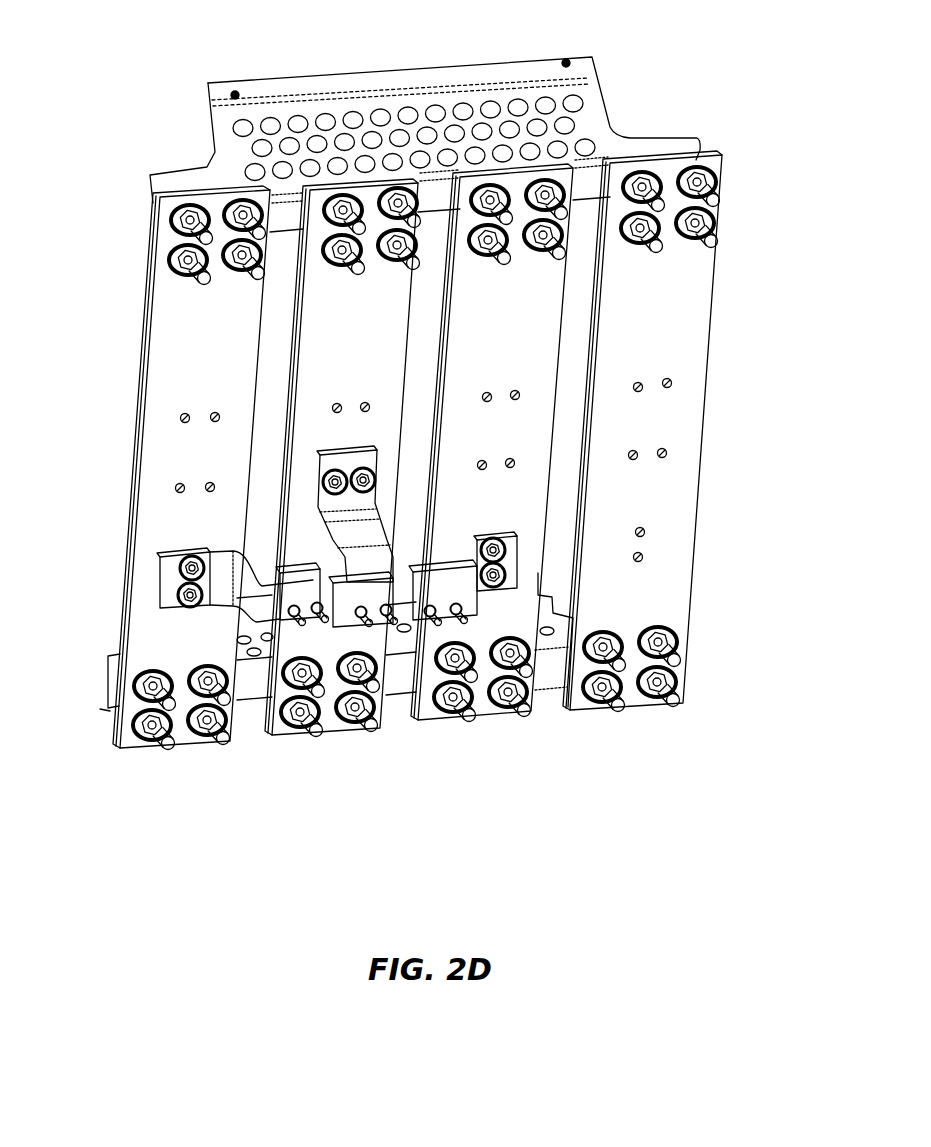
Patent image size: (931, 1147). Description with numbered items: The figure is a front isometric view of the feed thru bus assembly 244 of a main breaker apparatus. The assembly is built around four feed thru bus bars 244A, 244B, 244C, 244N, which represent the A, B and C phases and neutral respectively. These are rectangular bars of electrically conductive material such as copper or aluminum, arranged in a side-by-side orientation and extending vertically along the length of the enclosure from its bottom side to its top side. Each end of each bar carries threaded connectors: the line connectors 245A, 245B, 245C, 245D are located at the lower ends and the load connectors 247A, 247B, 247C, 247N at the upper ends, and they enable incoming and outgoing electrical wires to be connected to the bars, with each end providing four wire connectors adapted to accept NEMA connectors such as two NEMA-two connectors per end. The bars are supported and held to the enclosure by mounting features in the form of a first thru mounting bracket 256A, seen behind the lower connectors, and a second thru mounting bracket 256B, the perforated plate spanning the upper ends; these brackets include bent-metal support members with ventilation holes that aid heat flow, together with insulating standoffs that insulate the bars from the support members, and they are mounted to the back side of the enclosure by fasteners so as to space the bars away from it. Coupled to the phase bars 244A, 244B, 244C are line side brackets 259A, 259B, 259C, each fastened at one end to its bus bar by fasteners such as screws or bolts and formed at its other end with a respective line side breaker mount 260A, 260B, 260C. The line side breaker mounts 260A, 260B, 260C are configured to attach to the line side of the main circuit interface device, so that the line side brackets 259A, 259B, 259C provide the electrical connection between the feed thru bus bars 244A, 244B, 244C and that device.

The feed thru bus assembly 244 is at (140, 128).
The feed thru bus bar 244A is at (137, 425).
The feed thru bus bar 244B is at (296, 384).
The feed thru bus bar 244C is at (558, 352).
The feed thru bus bar 244N is at (702, 497).
The line connector 245A is at (153, 748).
The line connector 245B is at (295, 733).
The line connector 245C is at (443, 720).
The line connector 245D is at (600, 710).
The load connector 247A is at (183, 243).
The load connector 247B is at (402, 212).
The load connector 247C is at (563, 200).
The load connector 247N is at (663, 190).
The first thru mounting bracket 256A is at (568, 596).
The second thru mounting bracket 256B is at (470, 56).
The line side bracket 259A is at (223, 608).
The line side bracket 259B is at (320, 519).
The line side bracket 259C is at (517, 553).
The line side breaker mount 260A is at (280, 605).
The line side breaker mount 260B is at (374, 582).
The line side breaker mount 260C is at (432, 572).